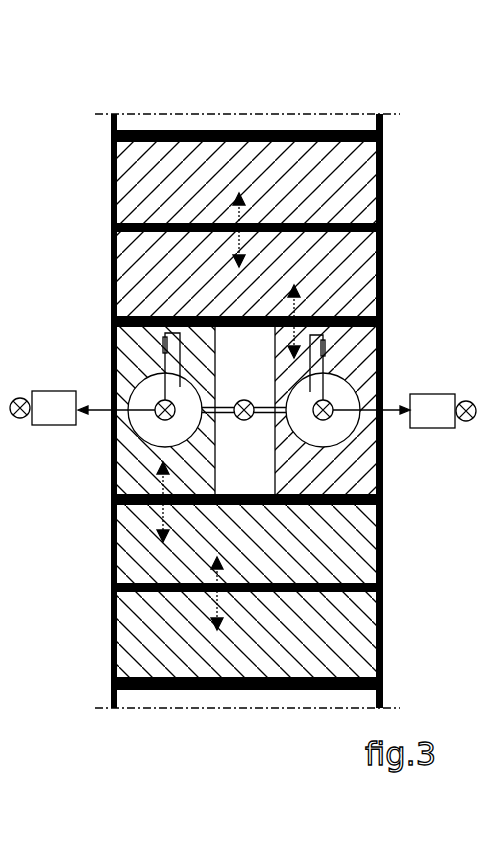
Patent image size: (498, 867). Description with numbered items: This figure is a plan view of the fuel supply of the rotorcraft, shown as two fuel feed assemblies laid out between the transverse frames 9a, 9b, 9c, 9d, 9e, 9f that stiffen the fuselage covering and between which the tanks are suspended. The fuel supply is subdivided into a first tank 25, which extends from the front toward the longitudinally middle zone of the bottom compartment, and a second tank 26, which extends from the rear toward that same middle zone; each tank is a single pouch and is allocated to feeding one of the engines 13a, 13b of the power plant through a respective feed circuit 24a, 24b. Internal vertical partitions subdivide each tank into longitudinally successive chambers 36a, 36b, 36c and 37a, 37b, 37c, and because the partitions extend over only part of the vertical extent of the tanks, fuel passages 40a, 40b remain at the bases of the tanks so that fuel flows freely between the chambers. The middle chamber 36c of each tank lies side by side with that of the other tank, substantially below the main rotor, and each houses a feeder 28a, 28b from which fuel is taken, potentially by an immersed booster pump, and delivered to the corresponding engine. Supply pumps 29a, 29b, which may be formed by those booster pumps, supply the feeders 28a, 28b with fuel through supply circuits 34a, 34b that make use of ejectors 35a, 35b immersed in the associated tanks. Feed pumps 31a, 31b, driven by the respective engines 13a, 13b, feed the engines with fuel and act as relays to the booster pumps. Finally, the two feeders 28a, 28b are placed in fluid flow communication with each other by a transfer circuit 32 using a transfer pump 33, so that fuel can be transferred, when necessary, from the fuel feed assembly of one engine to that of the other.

The transverse frame 9a is at (360, 508).
The transverse frame 9b is at (372, 335).
The transverse frame 9c is at (330, 692).
The transverse frame 9d is at (366, 596).
The transverse frame 9e is at (368, 224).
The transverse frame 9f is at (317, 131).
The engine 13a is at (432, 411).
The engine 13b is at (54, 408).
The feed circuit 24a is at (393, 407).
The feed circuit 24b is at (97, 407).
The first tank 25 is at (276, 593).
The second tank 26 is at (276, 227).
The feeder 28a is at (337, 447).
The feeder 28b is at (150, 445).
The supply pump 29a is at (323, 420).
The supply pump 29b is at (165, 420).
The feed pump 31a is at (470, 421).
The feed pump 31b is at (23, 418).
The transfer circuit 32 is at (244, 420).
The transfer pump 33 is at (243, 400).
The supply circuit 34a is at (326, 360).
The supply circuit 34b is at (163, 362).
The ejector 35a is at (312, 337).
The ejector 35b is at (178, 336).
The chamber 36a is at (352, 620).
The chamber 36b is at (246, 544).
The middle chamber 36c is at (166, 410).
The chamber 37a is at (246, 182).
The chamber 37b is at (246, 274).
The chamber 37c is at (325, 410).
The fuel passage 40a is at (191, 559).
The fuel passage 40b is at (265, 265).